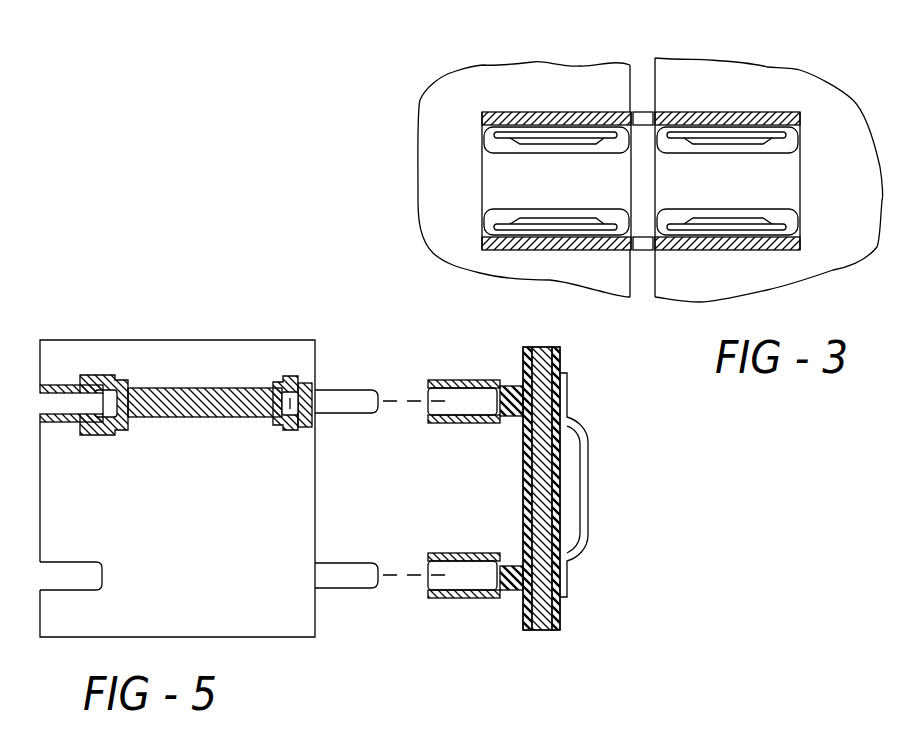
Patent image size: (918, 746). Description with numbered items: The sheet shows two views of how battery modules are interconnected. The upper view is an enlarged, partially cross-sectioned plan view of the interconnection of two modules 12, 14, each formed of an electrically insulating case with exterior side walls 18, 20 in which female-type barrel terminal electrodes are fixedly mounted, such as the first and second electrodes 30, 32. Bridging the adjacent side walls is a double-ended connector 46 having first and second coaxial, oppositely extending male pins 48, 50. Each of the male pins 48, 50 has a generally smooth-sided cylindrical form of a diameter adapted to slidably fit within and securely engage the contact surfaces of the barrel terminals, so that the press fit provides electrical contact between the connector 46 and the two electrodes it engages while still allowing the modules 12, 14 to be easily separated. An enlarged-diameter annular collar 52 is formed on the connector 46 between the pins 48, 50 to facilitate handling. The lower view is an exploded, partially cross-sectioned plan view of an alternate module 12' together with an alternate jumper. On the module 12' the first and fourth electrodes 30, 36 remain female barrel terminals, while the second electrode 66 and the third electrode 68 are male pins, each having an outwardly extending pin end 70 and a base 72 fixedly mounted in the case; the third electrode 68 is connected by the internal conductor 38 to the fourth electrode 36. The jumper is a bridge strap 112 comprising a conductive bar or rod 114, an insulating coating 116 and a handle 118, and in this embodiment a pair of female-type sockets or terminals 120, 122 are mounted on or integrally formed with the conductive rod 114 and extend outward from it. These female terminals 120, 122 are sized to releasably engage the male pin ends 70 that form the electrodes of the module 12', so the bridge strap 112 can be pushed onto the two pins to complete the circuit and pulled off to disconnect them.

In FIG. 3, the battery module 12 is at (524, 156).
In FIG. 3, the battery module 14 is at (828, 32).
In FIG. 3, the side wall 18 is at (648, 67).
In FIG. 3, the side wall 20 is at (630, 72).
In FIG. 3, the annular collar 52 is at (639, 112).
In FIG. 3, the first male pin 48 is at (495, 172).
In FIG. 3, the second male pin 50 is at (793, 182).
In FIG. 3, the connector 46 is at (596, 180).
In FIG. 3, the second electrode 32 is at (487, 243).
In FIG. 3, the first electrode 30 is at (757, 249).
In FIG. 5, the first electrode 30 is at (73, 582).
In FIG. 5, the battery module 12' is at (177, 452).
In FIG. 5, the fourth electrode 36 is at (59, 400).
In FIG. 5, the internal conductor 38 is at (165, 418).
In FIG. 5, the base 72 is at (298, 425).
In FIG. 5, the pin end 70 is at (355, 405).
In FIG. 5, the third electrode 68 is at (334, 418).
In FIG. 5, the second electrode 66 is at (341, 590).
In FIG. 5, the bridge strap 112 is at (507, 372).
In FIG. 5, the female terminal 122 is at (450, 422).
In FIG. 5, the female terminal 120 is at (460, 598).
In FIG. 5, the handle 118 is at (590, 528).
In FIG. 5, the conductive rod 114 is at (543, 580).
In FIG. 5, the insulating coating 116 is at (563, 622).